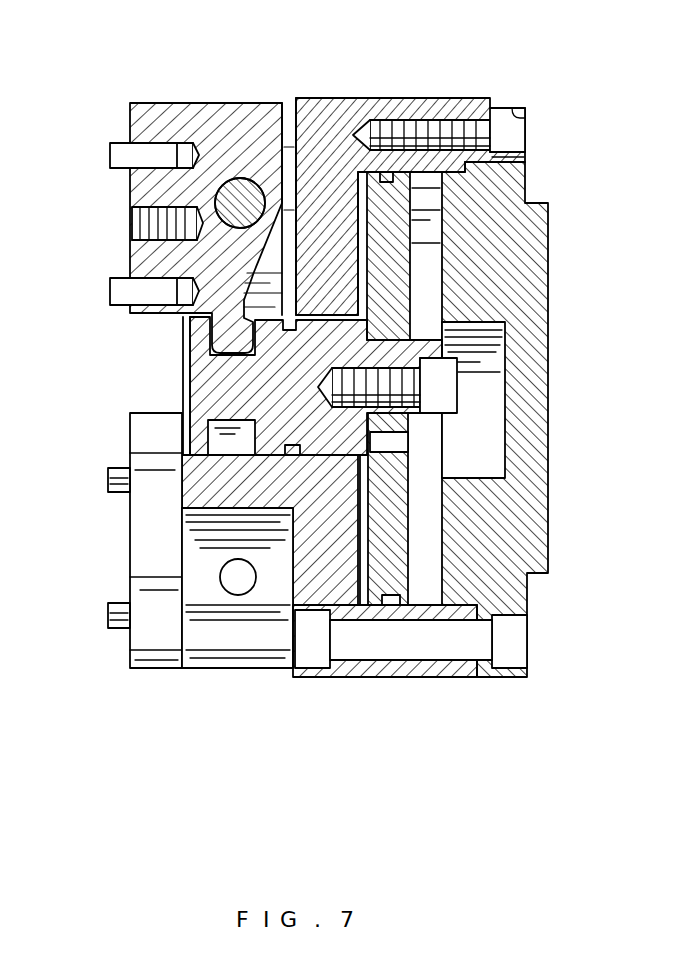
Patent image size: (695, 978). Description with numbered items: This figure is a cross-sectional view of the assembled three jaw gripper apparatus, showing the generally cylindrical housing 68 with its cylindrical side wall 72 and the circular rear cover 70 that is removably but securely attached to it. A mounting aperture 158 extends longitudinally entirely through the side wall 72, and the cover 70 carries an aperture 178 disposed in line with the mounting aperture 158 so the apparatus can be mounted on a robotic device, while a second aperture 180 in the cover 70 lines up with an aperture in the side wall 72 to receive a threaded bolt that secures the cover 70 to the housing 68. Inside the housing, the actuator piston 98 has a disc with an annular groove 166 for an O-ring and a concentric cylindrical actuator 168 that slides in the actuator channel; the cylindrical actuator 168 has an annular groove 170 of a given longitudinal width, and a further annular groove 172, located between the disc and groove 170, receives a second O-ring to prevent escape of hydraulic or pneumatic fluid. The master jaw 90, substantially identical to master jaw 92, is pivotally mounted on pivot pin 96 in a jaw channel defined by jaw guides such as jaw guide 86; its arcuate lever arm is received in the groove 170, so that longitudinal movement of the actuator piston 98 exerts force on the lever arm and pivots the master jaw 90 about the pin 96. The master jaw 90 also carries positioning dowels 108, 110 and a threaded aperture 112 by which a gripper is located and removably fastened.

The housing 68 is at (325, 99).
The rear cover 70 is at (444, 379).
The side wall 72 is at (373, 98).
The jaw guide 86 is at (218, 668).
The master jaw 90 is at (130, 116).
The master jaw 92 is at (128, 668).
The pivot pin 96 is at (238, 180).
The actuator piston 98 is at (405, 605).
The positioning dowel 108 is at (110, 154).
The positioning dowel 110 is at (110, 292).
The threaded aperture 112 is at (133, 220).
The mounting aperture 158 is at (355, 648).
The annular groove 166 is at (410, 107).
The cylindrical actuator 168 is at (190, 410).
The annular groove 170 is at (210, 450).
The annular groove 172 is at (300, 448).
The aperture 178 is at (528, 665).
The aperture 180 is at (520, 112).